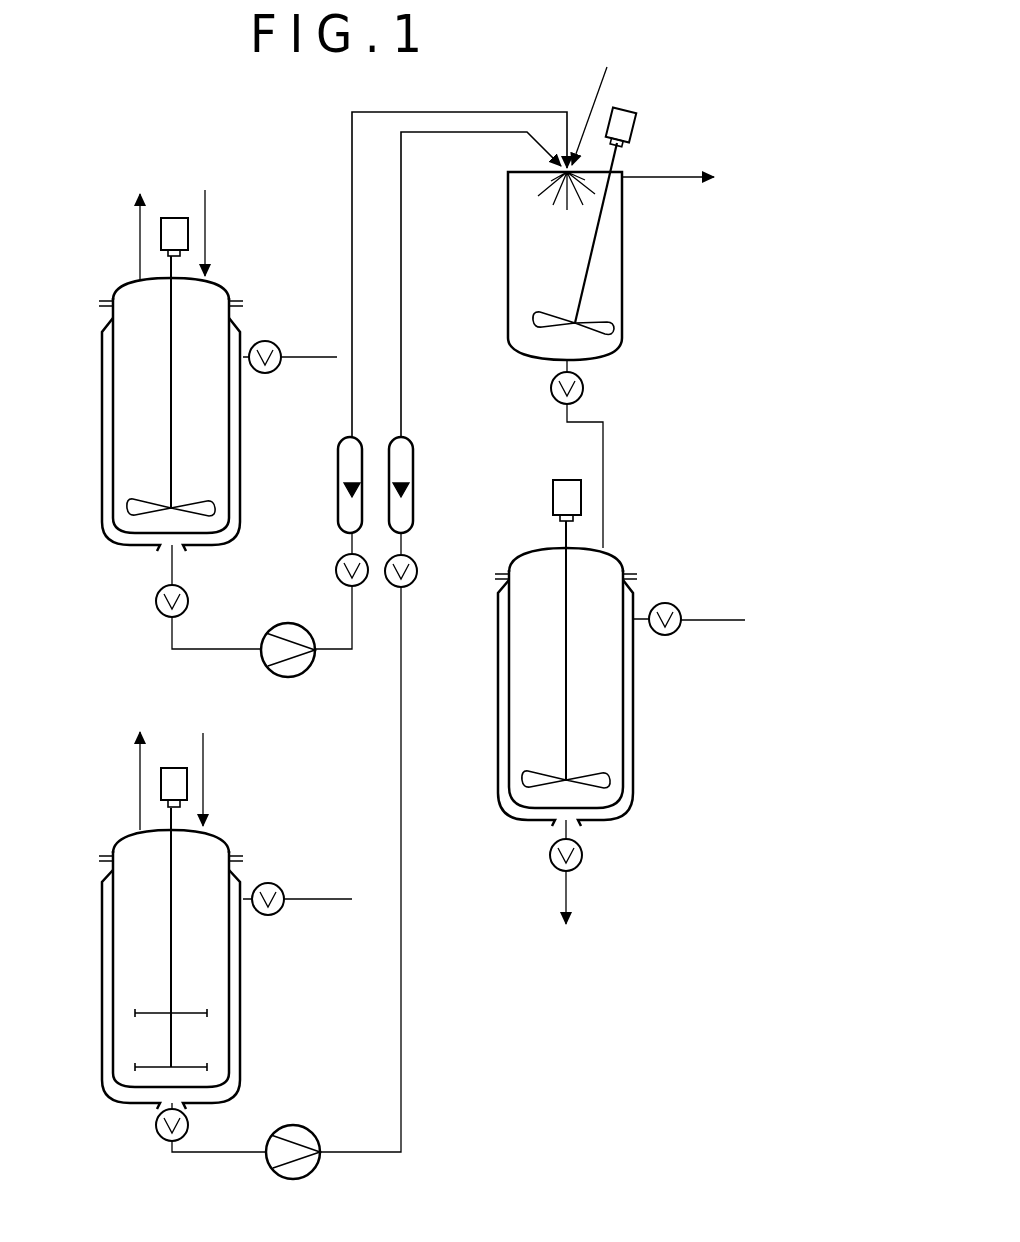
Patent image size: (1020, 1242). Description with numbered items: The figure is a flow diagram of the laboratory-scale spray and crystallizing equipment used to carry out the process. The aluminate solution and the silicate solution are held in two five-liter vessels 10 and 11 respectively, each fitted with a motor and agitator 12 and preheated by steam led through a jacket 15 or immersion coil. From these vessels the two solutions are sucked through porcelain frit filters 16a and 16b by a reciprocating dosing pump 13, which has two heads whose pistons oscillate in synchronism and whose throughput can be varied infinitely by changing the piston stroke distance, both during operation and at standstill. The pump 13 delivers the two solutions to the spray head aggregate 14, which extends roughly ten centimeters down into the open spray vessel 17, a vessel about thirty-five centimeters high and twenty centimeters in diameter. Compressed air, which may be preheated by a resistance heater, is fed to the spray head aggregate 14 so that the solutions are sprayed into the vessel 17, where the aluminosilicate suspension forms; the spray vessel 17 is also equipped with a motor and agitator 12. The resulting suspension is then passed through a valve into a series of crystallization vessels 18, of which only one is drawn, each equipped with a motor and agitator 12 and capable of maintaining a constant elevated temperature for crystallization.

The aluminate vessel 10 is at (130, 953).
The silicate vessel 11 is at (145, 418).
The motor and agitator 12 is at (175, 220).
The reciprocating dosing pump 13 is at (395, 440).
The spray head aggregate 14 is at (557, 167).
The jacket 15 is at (232, 443).
The porcelain frit filter 16a is at (300, 1106).
The porcelain frit filter 16b is at (300, 606).
The spray vessel 17 is at (622, 262).
The crystallization vessel 18 is at (617, 557).